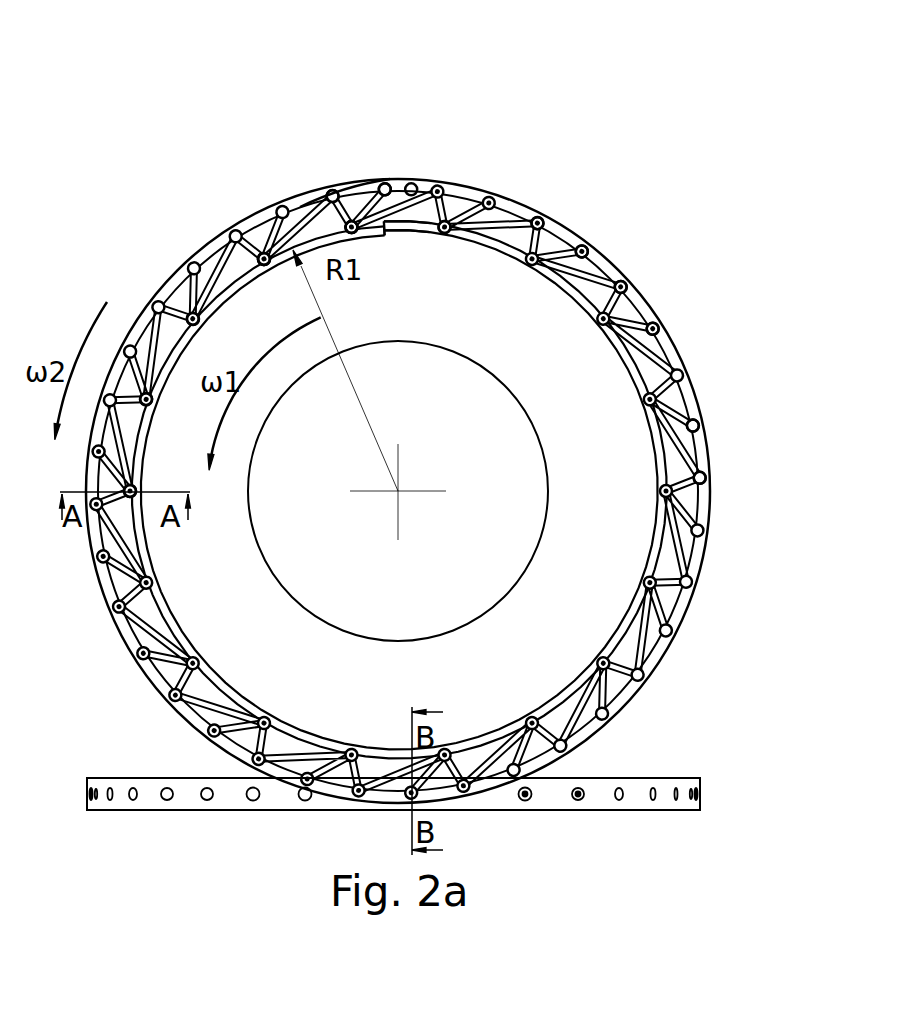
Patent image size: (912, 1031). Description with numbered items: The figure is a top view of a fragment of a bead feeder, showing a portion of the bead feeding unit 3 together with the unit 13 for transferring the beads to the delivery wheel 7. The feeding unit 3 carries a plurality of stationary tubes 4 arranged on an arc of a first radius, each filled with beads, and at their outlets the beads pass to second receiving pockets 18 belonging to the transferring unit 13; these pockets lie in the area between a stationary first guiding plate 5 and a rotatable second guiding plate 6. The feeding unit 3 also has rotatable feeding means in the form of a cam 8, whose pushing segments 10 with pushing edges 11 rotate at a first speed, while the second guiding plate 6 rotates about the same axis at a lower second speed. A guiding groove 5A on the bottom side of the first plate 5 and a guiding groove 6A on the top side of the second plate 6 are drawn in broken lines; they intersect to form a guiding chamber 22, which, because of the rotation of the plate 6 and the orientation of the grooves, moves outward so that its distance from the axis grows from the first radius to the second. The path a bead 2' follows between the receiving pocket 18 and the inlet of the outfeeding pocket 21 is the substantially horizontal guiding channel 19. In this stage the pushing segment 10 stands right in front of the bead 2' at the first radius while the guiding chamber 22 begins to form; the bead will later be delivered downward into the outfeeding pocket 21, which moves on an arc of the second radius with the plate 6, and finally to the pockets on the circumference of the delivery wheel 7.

The bead feeding unit 3 is at (213, 110).
The unit for transferring the beads 13 is at (124, 203).
The outfeeding pocket 21 is at (262, 254).
The bead 2' is at (305, 185).
The guiding channel 19 is at (341, 170).
The guiding chamber 22 is at (356, 205).
The second receiving pocket 18 is at (353, 220).
The guiding groove 6A is at (690, 398).
The pushing edge 11 is at (380, 216).
The pushing segment 10 is at (381, 224).
The guiding groove 5A is at (702, 488).
The tube 4 is at (145, 397).
The first guiding plate 5 is at (585, 251).
The second guiding plate 6 is at (628, 284).
The cam 8 is at (207, 605).
The delivery wheel 7 is at (187, 798).